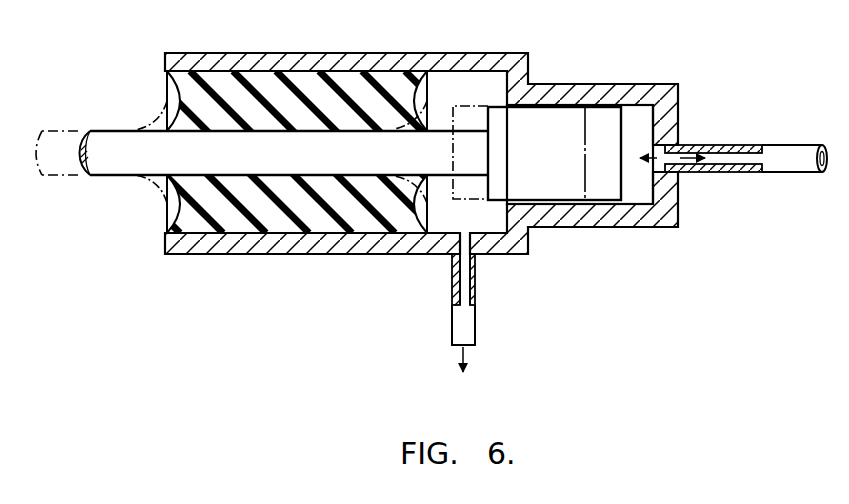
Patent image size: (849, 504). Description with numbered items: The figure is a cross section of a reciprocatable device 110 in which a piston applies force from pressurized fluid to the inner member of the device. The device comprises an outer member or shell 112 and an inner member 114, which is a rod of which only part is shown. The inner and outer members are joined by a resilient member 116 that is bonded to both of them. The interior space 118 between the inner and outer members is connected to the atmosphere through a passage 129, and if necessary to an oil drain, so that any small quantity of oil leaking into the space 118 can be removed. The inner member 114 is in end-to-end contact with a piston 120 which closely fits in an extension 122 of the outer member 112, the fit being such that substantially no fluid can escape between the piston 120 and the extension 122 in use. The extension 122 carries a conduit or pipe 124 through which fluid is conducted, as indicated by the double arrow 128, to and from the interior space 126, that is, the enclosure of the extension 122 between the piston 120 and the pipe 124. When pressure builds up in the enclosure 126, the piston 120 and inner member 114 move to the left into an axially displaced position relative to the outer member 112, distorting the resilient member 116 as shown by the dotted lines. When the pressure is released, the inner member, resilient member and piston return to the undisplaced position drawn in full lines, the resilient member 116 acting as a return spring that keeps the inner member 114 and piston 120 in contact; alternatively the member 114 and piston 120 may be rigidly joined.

The device 110 is at (478, 44).
The outer member or shell 112 is at (283, 55).
The inner member 114 is at (470, 168).
The resilient member 116 is at (275, 223).
The interior space 118 is at (448, 85).
The piston 120 is at (603, 187).
The extension 122 is at (593, 88).
The conduit or pipe 124 is at (723, 173).
The interior space 126 is at (643, 130).
The double arrow 128 is at (684, 155).
The passage 129 is at (453, 267).